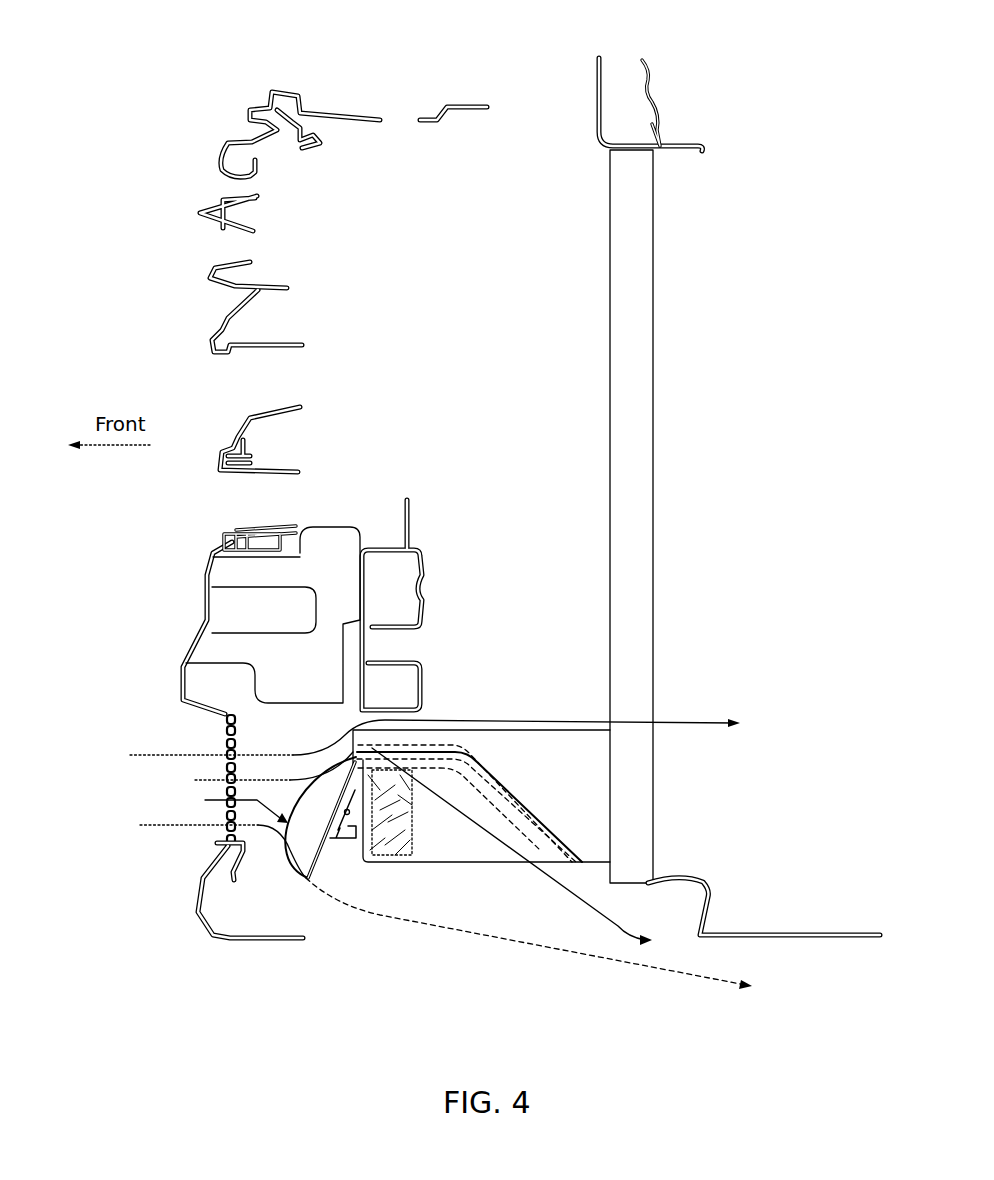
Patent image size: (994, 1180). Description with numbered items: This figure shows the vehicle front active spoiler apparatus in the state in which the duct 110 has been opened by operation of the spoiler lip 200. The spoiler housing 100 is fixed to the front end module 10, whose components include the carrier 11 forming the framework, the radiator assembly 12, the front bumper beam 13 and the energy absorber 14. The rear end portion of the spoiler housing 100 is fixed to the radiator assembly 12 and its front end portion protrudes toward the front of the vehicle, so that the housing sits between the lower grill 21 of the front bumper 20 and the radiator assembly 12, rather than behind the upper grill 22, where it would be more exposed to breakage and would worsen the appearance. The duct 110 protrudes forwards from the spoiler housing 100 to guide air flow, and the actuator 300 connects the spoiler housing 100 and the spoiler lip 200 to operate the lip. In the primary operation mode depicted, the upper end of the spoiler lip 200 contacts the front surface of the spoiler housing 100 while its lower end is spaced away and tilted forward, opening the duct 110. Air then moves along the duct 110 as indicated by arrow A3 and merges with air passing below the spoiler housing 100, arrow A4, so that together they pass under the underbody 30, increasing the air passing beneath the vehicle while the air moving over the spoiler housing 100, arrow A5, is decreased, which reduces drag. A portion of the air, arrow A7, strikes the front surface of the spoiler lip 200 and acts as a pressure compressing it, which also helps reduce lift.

The front end module 10 is at (711, 300).
The carrier 11 is at (597, 90).
The radiator assembly 12 is at (640, 391).
The front bumper beam 13 is at (418, 582).
The energy absorber 14 is at (240, 572).
The front bumper 20 is at (236, 620).
The lower grill 21 is at (220, 731).
The upper grill 22 is at (210, 270).
The underbody 30 is at (833, 938).
The spoiler housing 100 is at (566, 796).
The duct 110 is at (505, 775).
The spoiler lip 200 is at (302, 840).
The actuator 300 is at (393, 858).
The air moving along the duct A3 is at (529, 851).
The air passing through the lower side of the spoiler housing A4 is at (529, 944).
The air moving to the upper side of the spoiler housing A5 is at (516, 725).
The portion of air compressing the spoiler lip A7 is at (227, 806).